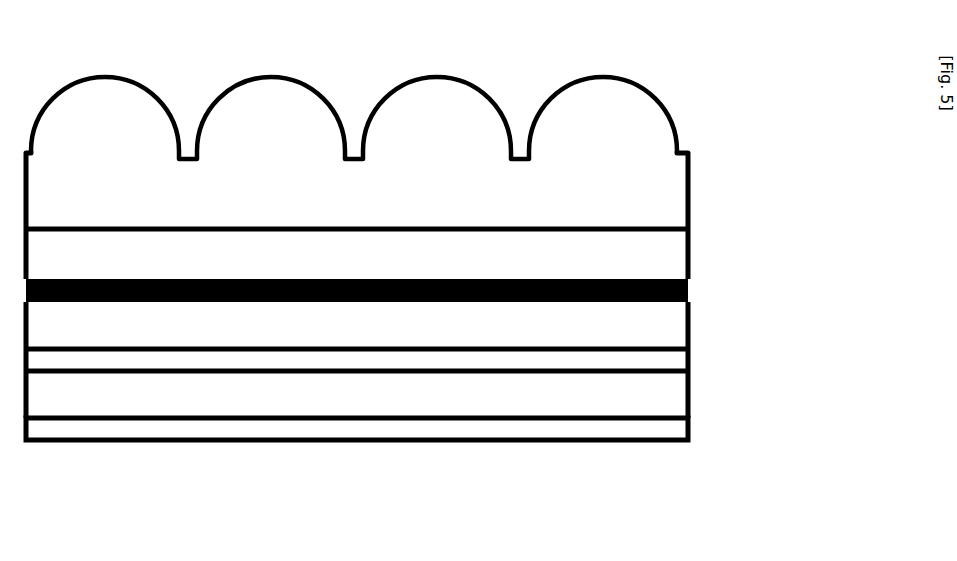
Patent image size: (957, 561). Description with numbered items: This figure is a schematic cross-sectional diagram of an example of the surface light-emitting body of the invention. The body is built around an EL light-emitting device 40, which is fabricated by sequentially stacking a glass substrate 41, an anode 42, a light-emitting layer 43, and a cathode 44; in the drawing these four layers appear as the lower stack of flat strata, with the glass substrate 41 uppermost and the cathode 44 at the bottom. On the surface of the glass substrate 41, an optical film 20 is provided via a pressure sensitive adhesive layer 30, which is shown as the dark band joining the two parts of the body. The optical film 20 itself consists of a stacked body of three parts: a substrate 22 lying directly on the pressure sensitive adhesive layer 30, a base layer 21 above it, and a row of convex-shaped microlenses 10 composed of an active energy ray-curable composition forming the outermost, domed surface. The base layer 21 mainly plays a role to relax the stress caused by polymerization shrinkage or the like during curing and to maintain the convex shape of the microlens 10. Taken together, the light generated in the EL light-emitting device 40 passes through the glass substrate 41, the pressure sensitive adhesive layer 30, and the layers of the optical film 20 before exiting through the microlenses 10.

The microlens 10 is at (709, 78).
The optical film 20 is at (451, 173).
The base layer 21 is at (709, 155).
The substrate 22 is at (399, 254).
The pressure sensitive adhesive layer 30 is at (690, 285).
The EL light-emitting device 40 is at (452, 376).
The glass substrate 41 is at (688, 322).
The anode 42 is at (690, 360).
The light-emitting layer 43 is at (690, 398).
The cathode 44 is at (690, 427).